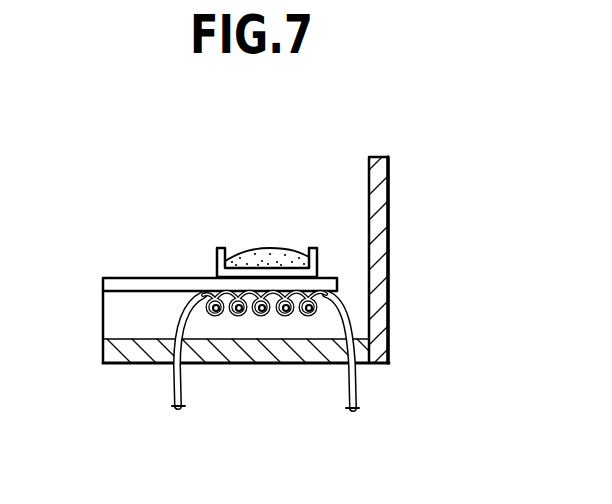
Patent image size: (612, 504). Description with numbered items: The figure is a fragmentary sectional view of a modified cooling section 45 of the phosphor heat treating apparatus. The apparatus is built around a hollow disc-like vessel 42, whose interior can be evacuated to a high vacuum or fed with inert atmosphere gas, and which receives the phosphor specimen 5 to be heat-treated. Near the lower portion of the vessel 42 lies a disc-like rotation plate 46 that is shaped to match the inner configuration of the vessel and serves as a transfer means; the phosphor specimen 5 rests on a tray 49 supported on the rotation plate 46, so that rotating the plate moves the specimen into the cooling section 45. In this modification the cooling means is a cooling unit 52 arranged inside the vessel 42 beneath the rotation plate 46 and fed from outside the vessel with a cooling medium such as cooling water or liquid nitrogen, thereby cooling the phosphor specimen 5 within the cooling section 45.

The cooling section 45 is at (256, 140).
The rotation plate 46 is at (138, 278).
The vessel 42 is at (377, 183).
The cooling unit 52 is at (338, 309).
The tray 49 is at (216, 262).
The phosphor specimen 5 is at (253, 250).